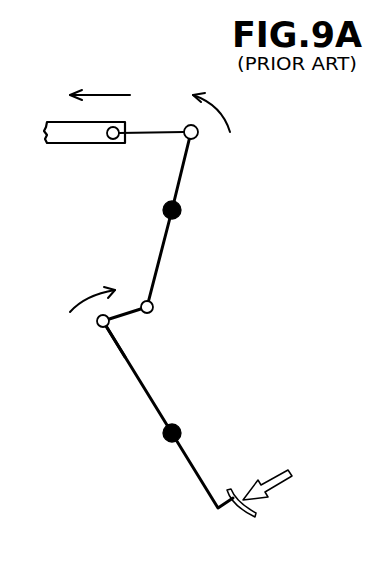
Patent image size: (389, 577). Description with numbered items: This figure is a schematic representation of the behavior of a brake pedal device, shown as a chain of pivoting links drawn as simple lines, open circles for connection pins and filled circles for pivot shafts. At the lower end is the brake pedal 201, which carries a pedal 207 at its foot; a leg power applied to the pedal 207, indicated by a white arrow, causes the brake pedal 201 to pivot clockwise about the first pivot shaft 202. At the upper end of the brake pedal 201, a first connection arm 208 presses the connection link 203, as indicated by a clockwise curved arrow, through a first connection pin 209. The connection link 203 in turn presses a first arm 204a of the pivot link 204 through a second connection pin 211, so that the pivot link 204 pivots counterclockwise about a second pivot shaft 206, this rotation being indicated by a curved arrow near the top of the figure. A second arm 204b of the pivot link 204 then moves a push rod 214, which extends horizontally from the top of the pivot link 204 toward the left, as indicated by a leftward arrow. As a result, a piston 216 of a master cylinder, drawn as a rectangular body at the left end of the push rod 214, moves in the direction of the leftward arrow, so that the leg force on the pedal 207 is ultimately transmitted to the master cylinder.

The brake pedal 201 is at (140, 385).
The first pivot shaft 202 is at (166, 441).
The connection link 203 is at (135, 303).
The pivot link 204 is at (224, 219).
The first arm 204a is at (207, 258).
The second arm 204b is at (187, 157).
The second pivot shaft 206 is at (163, 208).
The pedal 207 is at (257, 512).
The first connection arm 208 is at (115, 342).
The first connection pin 209 is at (110, 325).
The second connection pin 211 is at (155, 308).
The push rod 214 is at (152, 132).
The piston 216 is at (60, 143).